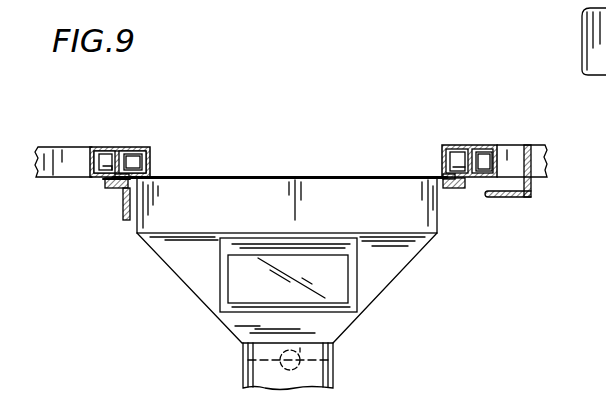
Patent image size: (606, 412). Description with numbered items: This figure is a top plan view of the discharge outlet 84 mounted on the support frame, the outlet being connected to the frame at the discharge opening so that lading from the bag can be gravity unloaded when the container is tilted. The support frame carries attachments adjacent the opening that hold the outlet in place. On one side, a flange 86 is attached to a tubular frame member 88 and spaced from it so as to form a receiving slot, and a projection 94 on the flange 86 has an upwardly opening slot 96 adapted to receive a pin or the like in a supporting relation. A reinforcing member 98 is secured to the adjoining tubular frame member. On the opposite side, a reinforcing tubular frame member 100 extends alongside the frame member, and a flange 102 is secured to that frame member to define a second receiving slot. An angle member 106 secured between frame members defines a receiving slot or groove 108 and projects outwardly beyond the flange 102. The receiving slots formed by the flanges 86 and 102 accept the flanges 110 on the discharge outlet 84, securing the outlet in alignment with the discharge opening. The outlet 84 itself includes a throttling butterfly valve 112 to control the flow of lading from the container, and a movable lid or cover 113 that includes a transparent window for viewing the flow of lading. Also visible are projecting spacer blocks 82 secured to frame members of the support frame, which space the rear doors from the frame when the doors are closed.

The projecting spacer block 82 is at (598, 40).
The discharge outlet 84 is at (152, 262).
The flange 86 is at (110, 188).
The tubular frame member 88 is at (104, 147).
The projection 94 is at (121, 184).
The upwardly opening slot 96 is at (124, 210).
The reinforcing member 98 is at (133, 147).
The reinforcing tubular frame member 100 is at (449, 145).
The flange 102 is at (457, 189).
The angle member 106 is at (536, 193).
The receiving slot or groove 108 is at (496, 185).
The flange 110 is at (130, 178).
The butterfly valve 112 is at (337, 361).
The movable lid or cover 113 is at (235, 292).